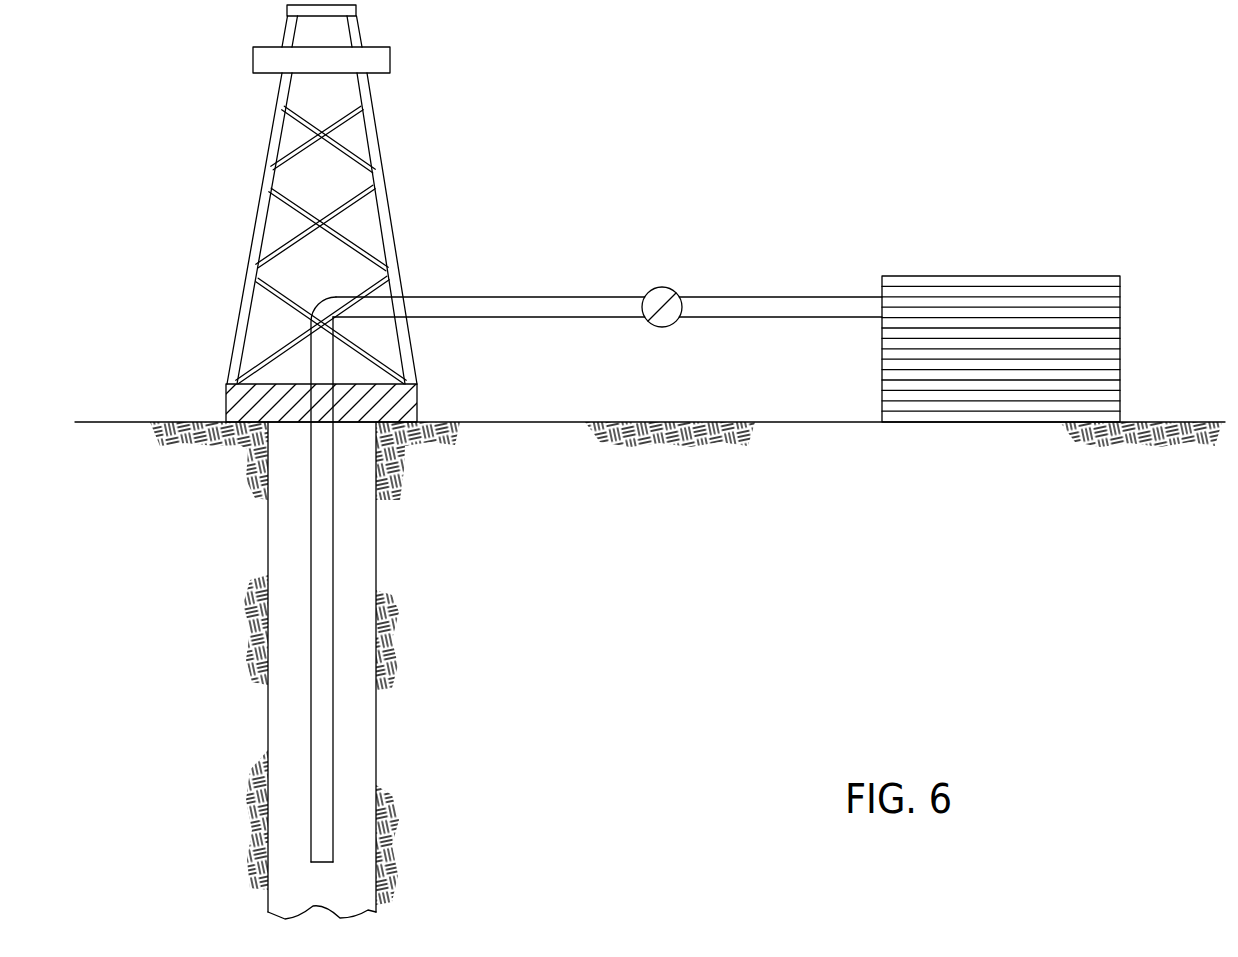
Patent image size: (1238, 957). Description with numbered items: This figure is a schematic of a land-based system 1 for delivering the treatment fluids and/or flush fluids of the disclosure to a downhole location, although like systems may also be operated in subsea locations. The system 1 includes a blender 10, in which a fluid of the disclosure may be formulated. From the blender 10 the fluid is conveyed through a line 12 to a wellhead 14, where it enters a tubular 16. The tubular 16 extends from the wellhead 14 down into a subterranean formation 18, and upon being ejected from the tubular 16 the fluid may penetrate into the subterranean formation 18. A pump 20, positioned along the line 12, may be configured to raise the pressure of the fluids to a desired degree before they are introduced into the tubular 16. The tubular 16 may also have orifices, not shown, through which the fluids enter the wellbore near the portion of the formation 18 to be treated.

The system 1 is at (150, 163).
The blender 10 is at (1012, 276).
The line 12 is at (487, 297).
The wellhead 14 is at (226, 386).
The tubular 16 is at (333, 543).
The subterranean formation 18 is at (102, 667).
The pump 20 is at (662, 287).